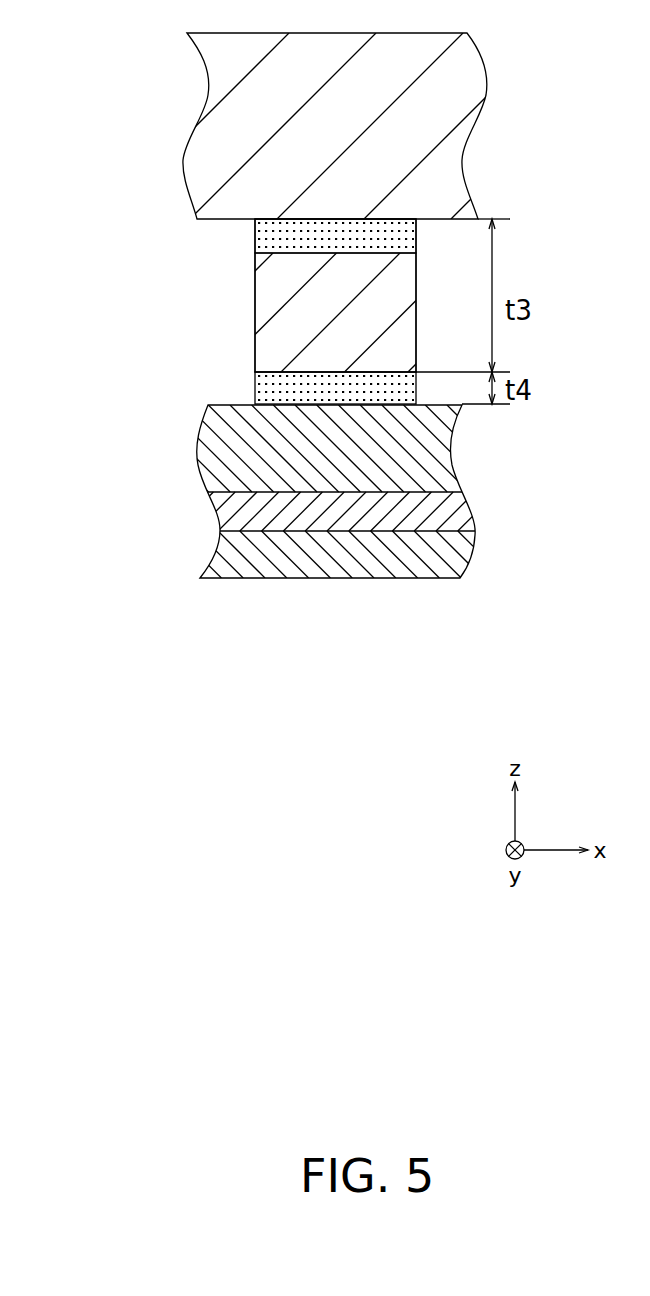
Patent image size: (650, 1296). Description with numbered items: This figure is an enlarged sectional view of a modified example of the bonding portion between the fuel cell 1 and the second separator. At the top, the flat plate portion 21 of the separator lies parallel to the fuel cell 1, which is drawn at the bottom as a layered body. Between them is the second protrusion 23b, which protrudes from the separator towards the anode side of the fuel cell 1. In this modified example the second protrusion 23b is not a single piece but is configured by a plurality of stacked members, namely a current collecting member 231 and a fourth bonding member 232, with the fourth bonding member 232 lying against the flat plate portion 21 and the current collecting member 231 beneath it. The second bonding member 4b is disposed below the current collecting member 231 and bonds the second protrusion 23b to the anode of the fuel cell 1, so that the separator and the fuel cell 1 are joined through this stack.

The flat plate portion 21 is at (170, 140).
The second protrusion 23b is at (100, 245).
The fourth bonding member 232 is at (303, 233).
The current collecting member 231 is at (312, 325).
The second bonding member 4b is at (255, 385).
The fuel cell 1 is at (202, 492).